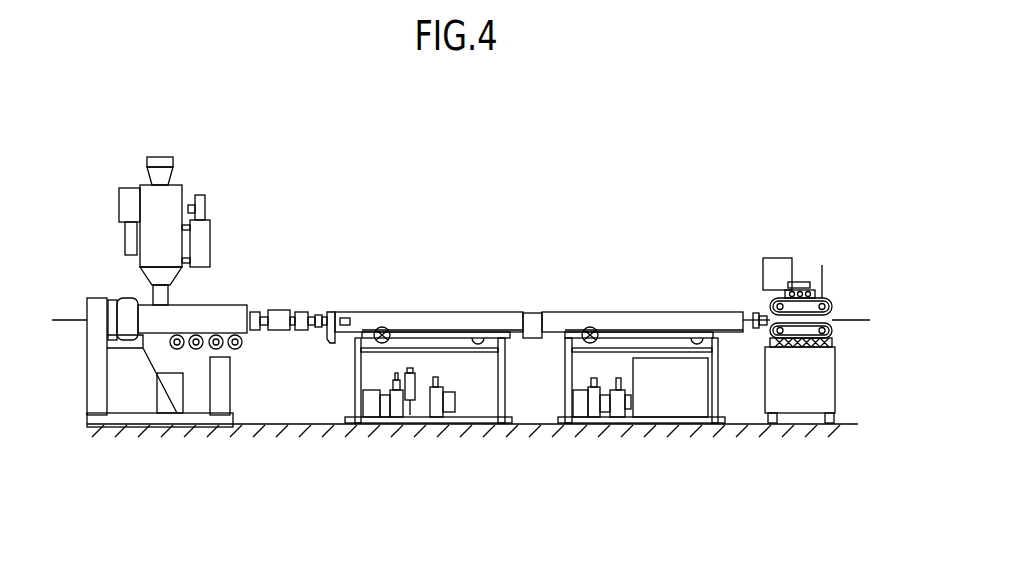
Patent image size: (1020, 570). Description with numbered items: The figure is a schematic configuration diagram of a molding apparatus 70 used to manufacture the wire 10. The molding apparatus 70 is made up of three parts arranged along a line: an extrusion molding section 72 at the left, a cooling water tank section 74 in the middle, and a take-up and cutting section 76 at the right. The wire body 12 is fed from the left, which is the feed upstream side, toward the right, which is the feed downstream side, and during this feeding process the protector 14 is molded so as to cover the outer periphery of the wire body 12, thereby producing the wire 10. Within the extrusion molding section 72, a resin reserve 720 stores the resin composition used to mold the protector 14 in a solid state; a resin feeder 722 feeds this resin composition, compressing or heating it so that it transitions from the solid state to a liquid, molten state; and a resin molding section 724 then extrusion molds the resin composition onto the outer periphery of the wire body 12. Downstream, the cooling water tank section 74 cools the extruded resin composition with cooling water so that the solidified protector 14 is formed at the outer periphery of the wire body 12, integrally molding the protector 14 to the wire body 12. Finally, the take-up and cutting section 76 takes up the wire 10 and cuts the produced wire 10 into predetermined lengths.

The wire 10 is at (855, 318).
The wire body 12 is at (73, 320).
The protector 14 is at (325, 312).
The molding apparatus 70 is at (473, 185).
The extrusion molding section 72 is at (327, 540).
The cooling water tank section 74 is at (755, 540).
The take-up and cutting section 76 is at (835, 540).
The resin reserve 720 is at (190, 187).
The resin feeder 722 is at (222, 318).
The resin molding section 724 is at (280, 308).